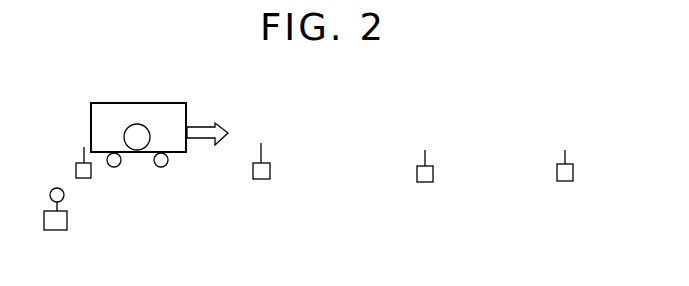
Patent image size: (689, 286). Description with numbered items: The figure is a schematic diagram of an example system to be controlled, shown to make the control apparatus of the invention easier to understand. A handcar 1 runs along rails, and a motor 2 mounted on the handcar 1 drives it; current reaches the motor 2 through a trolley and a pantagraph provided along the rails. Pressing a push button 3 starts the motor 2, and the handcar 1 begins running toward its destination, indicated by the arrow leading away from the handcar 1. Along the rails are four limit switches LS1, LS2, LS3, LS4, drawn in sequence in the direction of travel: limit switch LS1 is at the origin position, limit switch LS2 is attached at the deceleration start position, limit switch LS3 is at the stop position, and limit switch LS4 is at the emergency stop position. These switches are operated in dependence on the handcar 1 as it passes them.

The handcar 1 is at (157, 103).
The motor 2 is at (149, 131).
The push button 3 is at (67, 222).
The limit switch LS1 is at (84, 178).
The limit switch LS2 is at (262, 179).
The limit switch LS3 is at (425, 182).
The limit switch LS4 is at (565, 181).